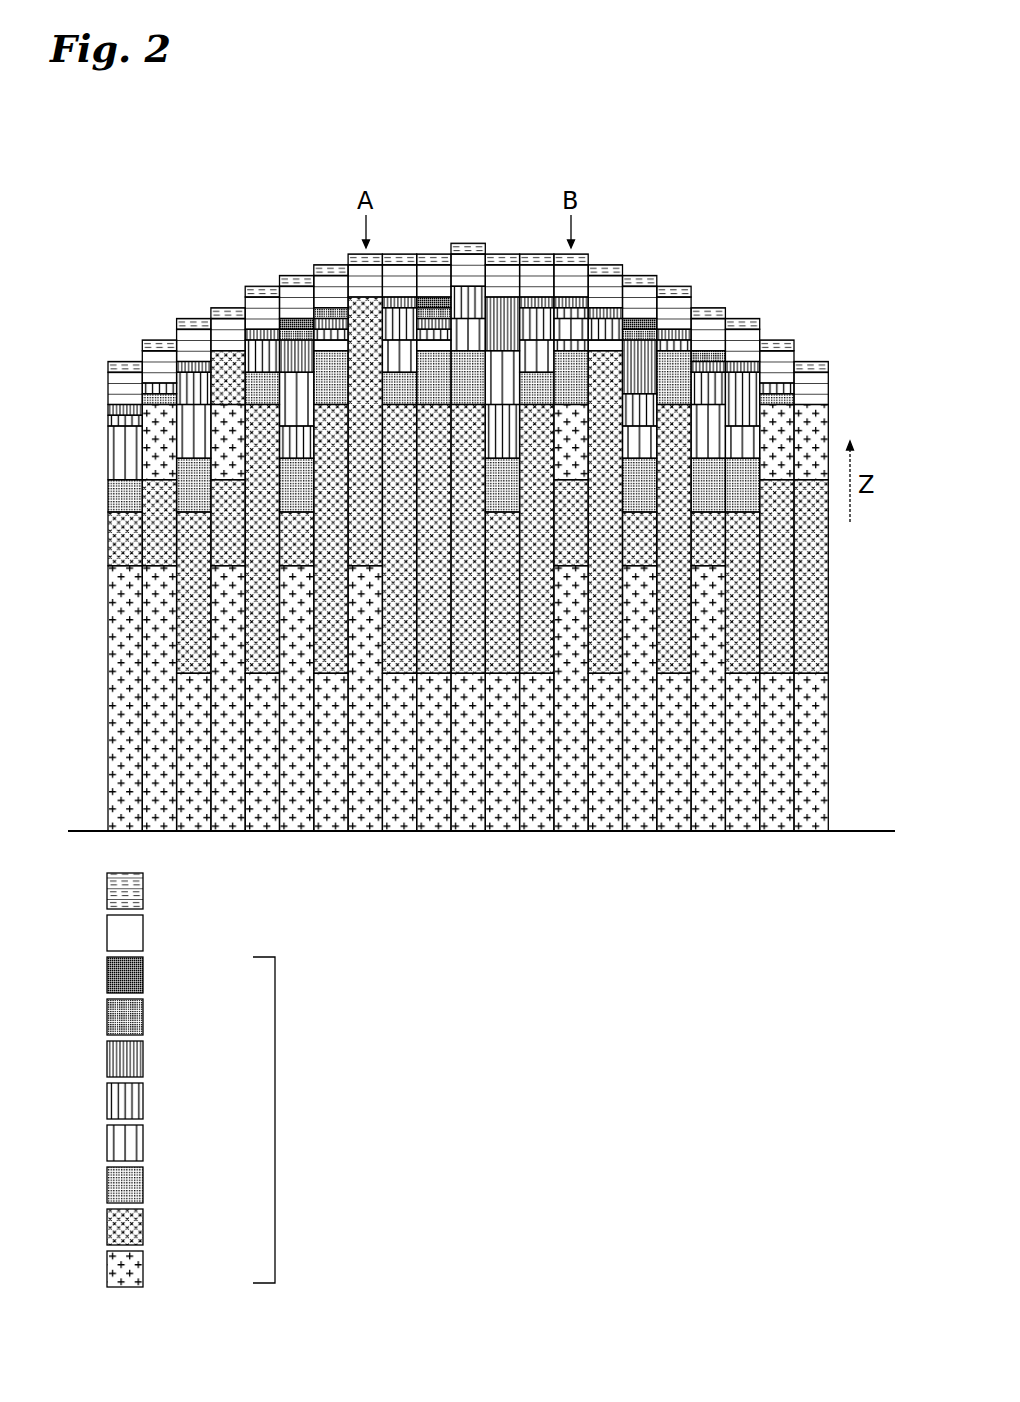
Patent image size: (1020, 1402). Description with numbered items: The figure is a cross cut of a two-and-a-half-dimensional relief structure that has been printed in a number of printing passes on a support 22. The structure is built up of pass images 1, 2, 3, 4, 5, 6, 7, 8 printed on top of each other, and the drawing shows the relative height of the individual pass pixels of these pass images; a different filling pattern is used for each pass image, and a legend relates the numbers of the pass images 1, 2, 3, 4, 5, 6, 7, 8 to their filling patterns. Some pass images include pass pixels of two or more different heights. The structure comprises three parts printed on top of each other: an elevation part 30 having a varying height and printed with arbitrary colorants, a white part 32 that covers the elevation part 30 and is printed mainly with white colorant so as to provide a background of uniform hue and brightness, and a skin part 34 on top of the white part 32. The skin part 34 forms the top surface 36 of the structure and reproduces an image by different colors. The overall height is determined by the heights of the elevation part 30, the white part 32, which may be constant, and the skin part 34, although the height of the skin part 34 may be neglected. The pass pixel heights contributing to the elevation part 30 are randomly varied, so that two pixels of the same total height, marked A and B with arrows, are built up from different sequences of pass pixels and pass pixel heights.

The support 22 is at (858, 830).
The elevation part 30 is at (233, 1122).
The white part 32 is at (143, 937).
The skin part 34 is at (143, 901).
The top surface 36 is at (289, 268).
The pass image 1 is at (145, 1269).
The pass image 2 is at (145, 1227).
The pass image 3 is at (145, 1185).
The pass image 4 is at (145, 1143).
The pass image 5 is at (145, 1101).
The pass image 6 is at (145, 1059).
The pass image 7 is at (145, 1017).
The pass image 8 is at (145, 975).